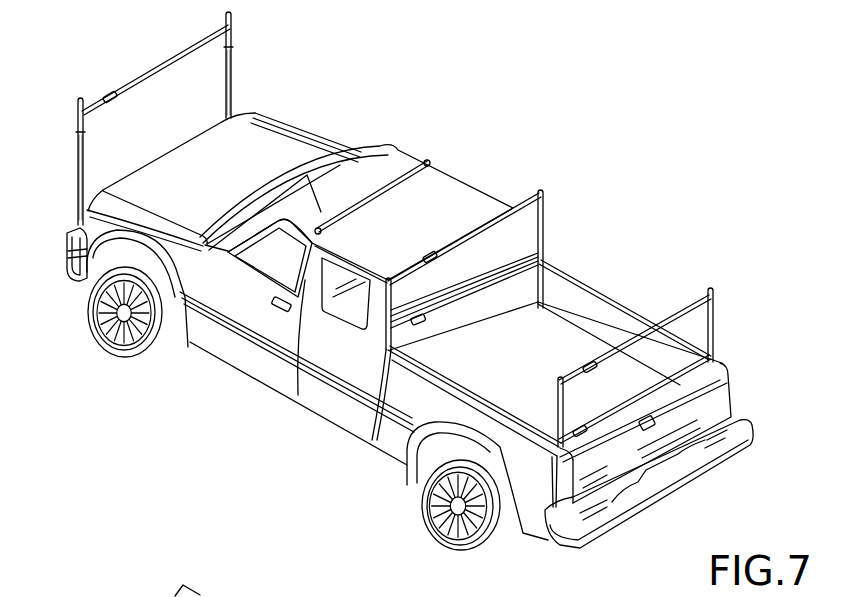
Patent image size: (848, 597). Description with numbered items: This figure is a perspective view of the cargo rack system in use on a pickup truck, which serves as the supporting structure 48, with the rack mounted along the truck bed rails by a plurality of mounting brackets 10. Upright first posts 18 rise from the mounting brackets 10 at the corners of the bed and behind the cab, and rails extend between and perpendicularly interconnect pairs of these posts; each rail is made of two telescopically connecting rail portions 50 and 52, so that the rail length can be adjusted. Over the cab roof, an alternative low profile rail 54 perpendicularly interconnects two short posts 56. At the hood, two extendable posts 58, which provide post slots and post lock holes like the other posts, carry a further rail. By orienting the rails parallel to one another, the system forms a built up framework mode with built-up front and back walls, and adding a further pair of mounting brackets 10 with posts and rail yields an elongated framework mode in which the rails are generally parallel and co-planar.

The mounting bracket 10 is at (75, 225).
The first post 18 is at (233, 37).
The supporting structure 48 is at (588, 278).
The rail portion 50 is at (172, 58).
The rail portion 52 is at (110, 98).
The low profile rail 54 is at (363, 207).
The short post 56 is at (426, 161).
The extendable post 58 is at (233, 75).